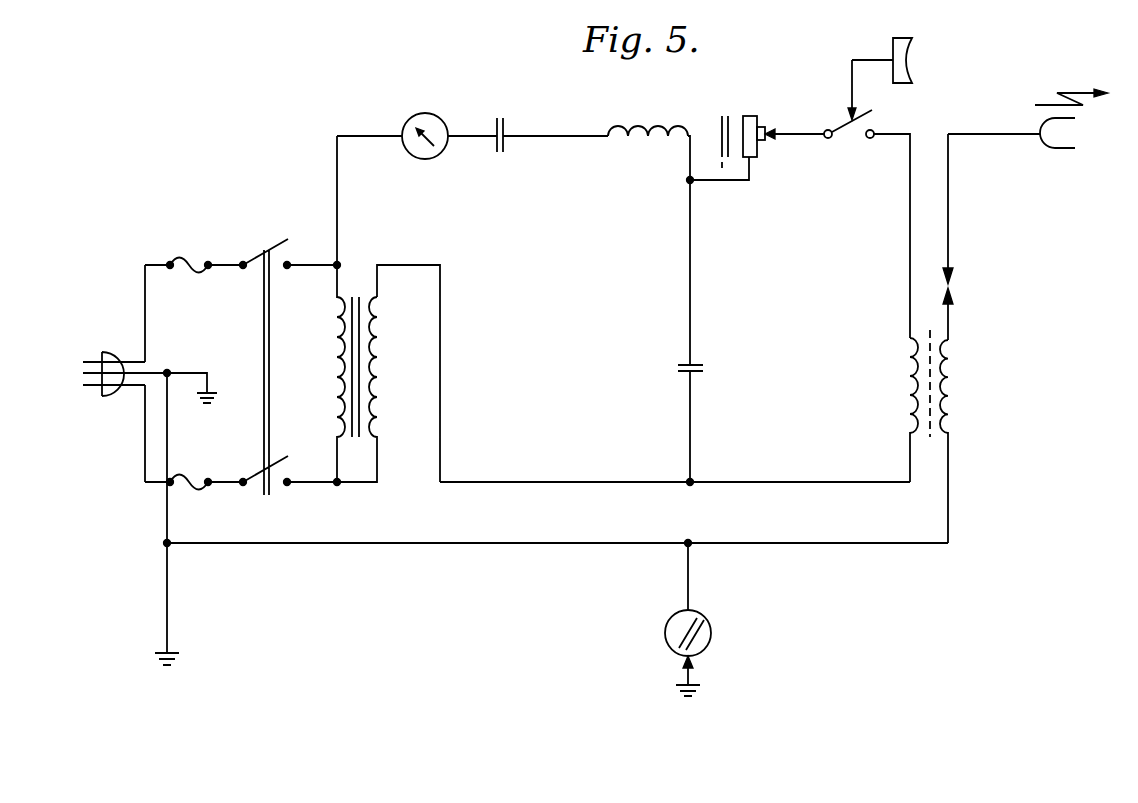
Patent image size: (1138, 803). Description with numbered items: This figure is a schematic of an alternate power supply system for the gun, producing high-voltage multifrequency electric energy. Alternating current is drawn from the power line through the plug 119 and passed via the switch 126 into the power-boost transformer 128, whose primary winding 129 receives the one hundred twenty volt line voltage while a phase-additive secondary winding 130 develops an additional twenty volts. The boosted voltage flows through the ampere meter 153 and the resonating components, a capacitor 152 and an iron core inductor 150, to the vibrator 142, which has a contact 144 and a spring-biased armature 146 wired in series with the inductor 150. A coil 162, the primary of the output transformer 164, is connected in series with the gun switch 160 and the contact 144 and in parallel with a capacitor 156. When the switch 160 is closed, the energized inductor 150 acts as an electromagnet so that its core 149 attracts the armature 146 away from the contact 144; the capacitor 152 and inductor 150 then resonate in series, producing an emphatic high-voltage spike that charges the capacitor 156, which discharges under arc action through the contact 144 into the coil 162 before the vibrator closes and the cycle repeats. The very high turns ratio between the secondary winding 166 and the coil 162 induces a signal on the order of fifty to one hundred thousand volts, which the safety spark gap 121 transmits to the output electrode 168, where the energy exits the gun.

The plug 119 is at (134, 332).
The safety spark gap 121 is at (955, 285).
The switch 126 is at (276, 230).
The power-boost transformer 128 is at (355, 290).
The primary winding 129 is at (340, 445).
The secondary winding 130 is at (373, 466).
The vibrator 142 is at (758, 112).
The contact 144 is at (776, 128).
The armature 146 is at (752, 170).
The core 149 is at (726, 112).
The inductor 150 is at (645, 125).
The capacitor 152 is at (508, 114).
The ampere meter 153 is at (433, 114).
The capacitor 156 is at (705, 367).
The switch 160 is at (906, 62).
The coil 162 is at (907, 412).
The output transformer 164 is at (933, 333).
The secondary winding 166 is at (950, 371).
The output electrode 168 is at (1066, 150).